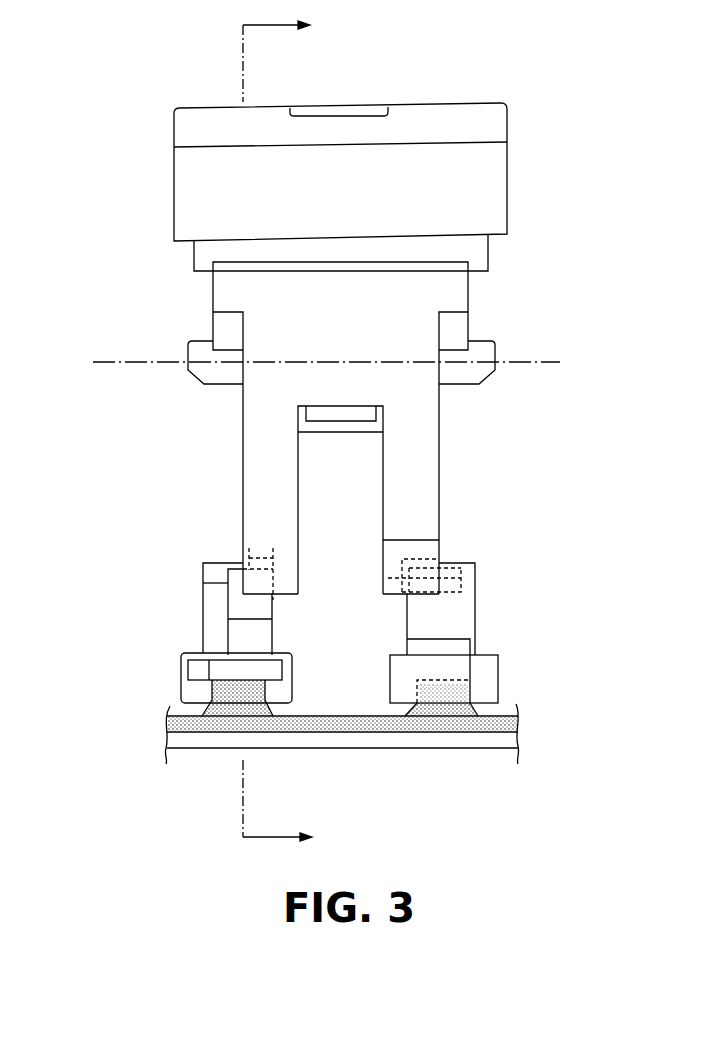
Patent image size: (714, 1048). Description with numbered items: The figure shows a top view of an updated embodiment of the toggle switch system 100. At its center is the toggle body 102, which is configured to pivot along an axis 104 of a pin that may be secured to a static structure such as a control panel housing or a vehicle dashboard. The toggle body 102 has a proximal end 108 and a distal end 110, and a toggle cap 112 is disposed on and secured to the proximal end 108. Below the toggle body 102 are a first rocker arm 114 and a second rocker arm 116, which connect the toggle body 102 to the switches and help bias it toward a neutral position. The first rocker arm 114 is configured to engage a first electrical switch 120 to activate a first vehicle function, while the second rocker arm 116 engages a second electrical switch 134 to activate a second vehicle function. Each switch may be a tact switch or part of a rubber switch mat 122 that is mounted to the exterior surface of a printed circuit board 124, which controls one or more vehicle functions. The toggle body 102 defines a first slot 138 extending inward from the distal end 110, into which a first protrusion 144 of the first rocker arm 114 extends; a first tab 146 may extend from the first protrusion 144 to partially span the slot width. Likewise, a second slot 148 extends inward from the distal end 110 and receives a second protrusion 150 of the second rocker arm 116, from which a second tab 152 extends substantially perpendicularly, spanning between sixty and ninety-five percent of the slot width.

The toggle switch system 100 is at (158, 60).
The toggle body 102 is at (446, 402).
The axis 104 is at (168, 362).
The proximal end 108 is at (468, 300).
The distal end 110 is at (440, 511).
The toggle cap 112 is at (508, 130).
The first rocker arm 114 is at (196, 634).
The second rocker arm 116 is at (481, 618).
The first electrical switch 120 is at (212, 692).
The rubber switch mat 122 is at (158, 722).
The printed circuit board 124 is at (485, 740).
The second electrical switch 134 is at (470, 658).
The first slot 138 is at (258, 556).
The first protrusion 144 is at (272, 605).
The first tab 146 is at (246, 568).
The second slot 148 is at (388, 578).
The second protrusion 150 is at (433, 613).
The second tab 152 is at (443, 568).